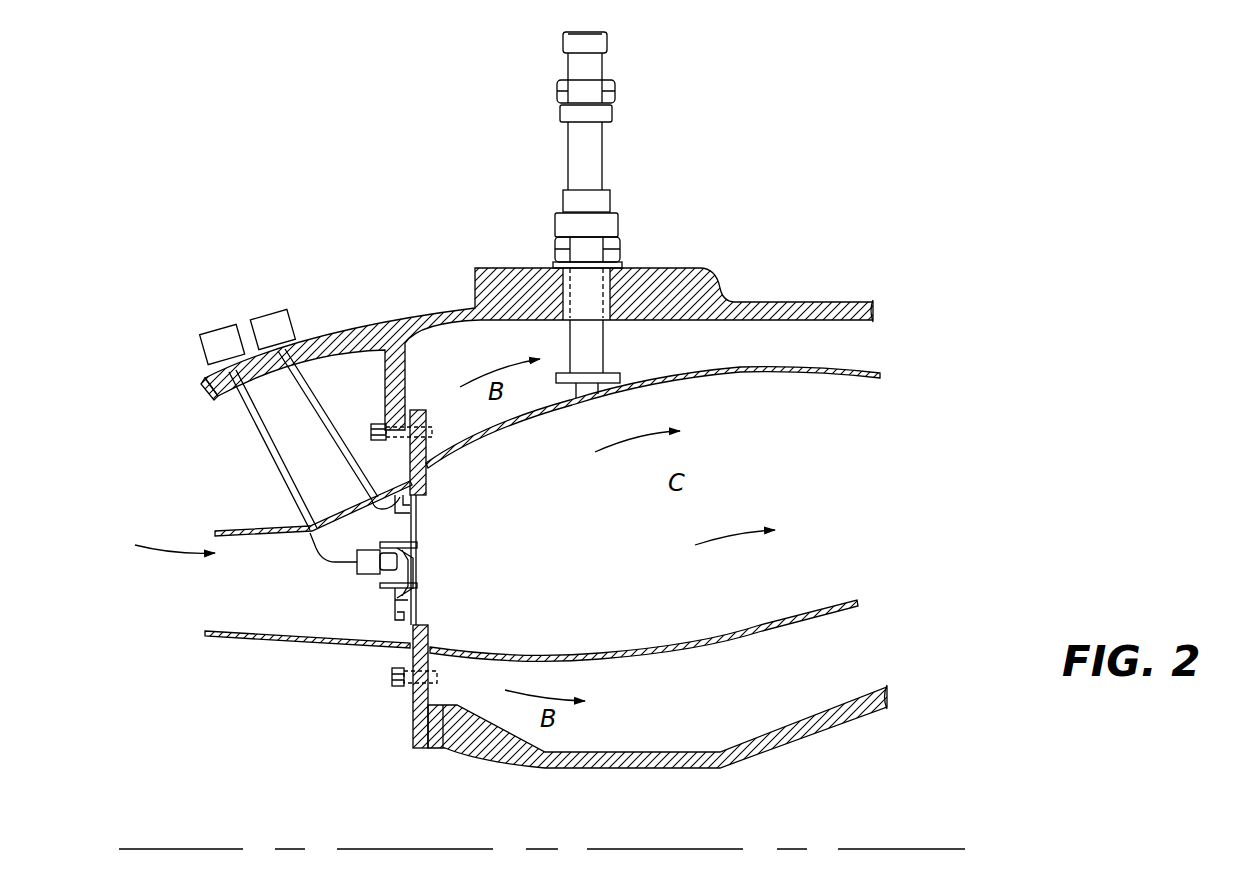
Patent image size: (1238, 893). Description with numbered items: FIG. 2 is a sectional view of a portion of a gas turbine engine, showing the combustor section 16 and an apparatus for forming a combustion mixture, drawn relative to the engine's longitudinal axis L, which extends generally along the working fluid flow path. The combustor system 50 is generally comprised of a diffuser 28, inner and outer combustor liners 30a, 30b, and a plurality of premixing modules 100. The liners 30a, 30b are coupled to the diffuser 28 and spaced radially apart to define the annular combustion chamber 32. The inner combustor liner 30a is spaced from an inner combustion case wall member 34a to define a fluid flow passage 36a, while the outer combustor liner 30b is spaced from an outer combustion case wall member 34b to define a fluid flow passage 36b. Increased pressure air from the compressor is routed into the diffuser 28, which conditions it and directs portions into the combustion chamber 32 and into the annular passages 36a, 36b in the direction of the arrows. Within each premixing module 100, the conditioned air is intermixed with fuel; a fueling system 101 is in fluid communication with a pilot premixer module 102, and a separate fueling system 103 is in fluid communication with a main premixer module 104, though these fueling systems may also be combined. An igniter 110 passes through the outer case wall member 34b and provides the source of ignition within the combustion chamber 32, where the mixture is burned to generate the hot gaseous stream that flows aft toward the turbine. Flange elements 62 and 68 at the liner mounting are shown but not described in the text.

The combustor section 16 is at (880, 735).
The diffuser 28 is at (252, 650).
The inner combustor liner 30a is at (748, 650).
The outer combustor liner 30b is at (792, 372).
The combustion chamber 32 is at (784, 463).
The inner combustion case wall member 34a is at (735, 768).
The outer combustion case wall member 34b is at (790, 300).
The fluid flow passage 36a is at (670, 698).
The fluid flow passage 36b is at (690, 349).
The combustor system 50 is at (216, 296).
The casing flange 62 is at (440, 750).
The mounting plate 68 is at (420, 752).
The premixing module 100 is at (382, 588).
The fueling system 101 is at (212, 346).
The pilot premixer module 102 is at (352, 578).
The fueling system 103 is at (286, 325).
The main premixer module 104 is at (378, 512).
The igniter 110 is at (600, 152).
The longitudinal axis L is at (935, 848).